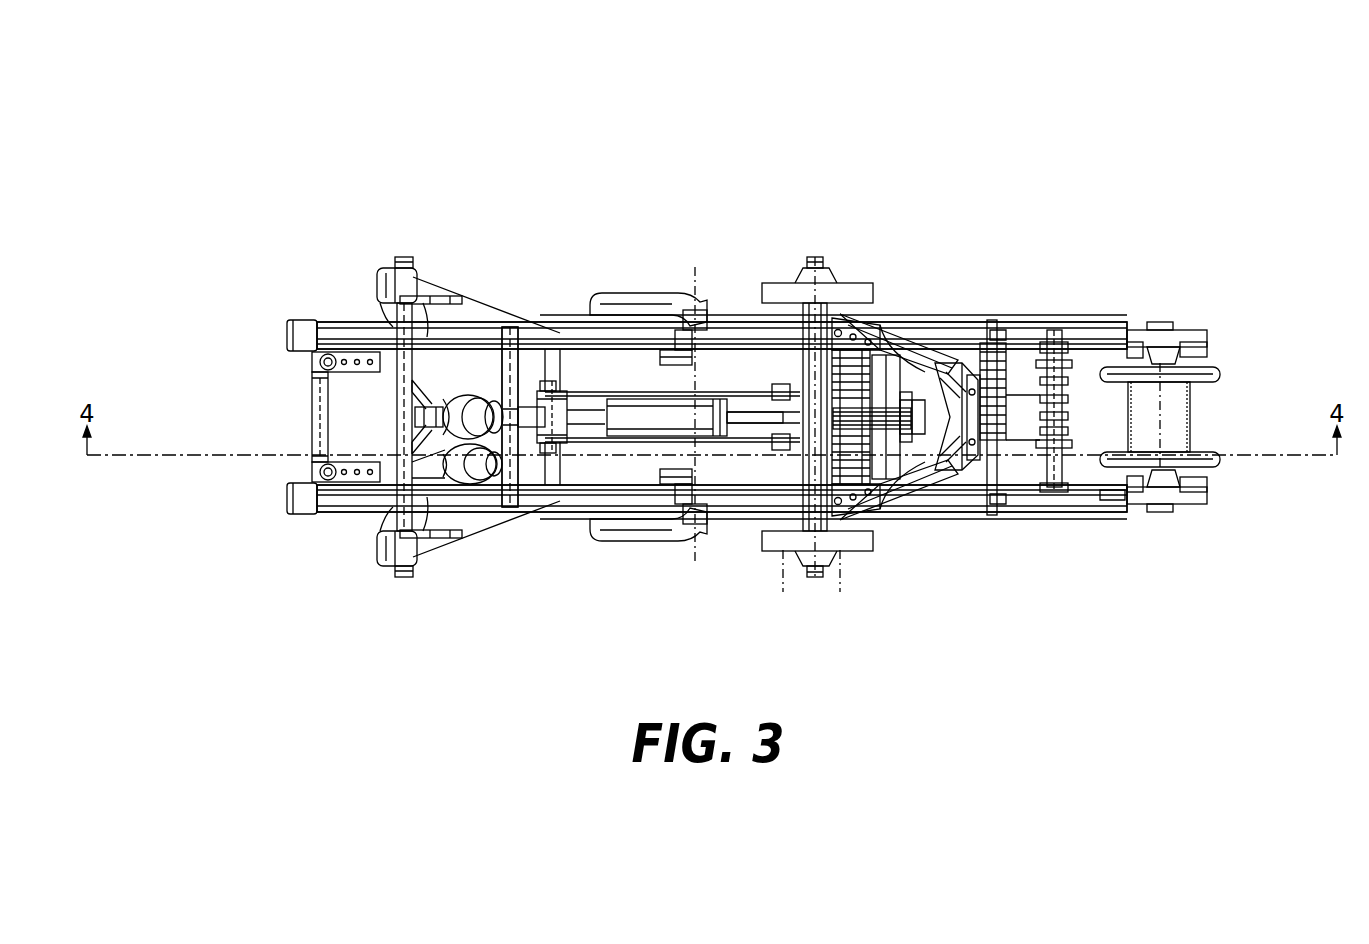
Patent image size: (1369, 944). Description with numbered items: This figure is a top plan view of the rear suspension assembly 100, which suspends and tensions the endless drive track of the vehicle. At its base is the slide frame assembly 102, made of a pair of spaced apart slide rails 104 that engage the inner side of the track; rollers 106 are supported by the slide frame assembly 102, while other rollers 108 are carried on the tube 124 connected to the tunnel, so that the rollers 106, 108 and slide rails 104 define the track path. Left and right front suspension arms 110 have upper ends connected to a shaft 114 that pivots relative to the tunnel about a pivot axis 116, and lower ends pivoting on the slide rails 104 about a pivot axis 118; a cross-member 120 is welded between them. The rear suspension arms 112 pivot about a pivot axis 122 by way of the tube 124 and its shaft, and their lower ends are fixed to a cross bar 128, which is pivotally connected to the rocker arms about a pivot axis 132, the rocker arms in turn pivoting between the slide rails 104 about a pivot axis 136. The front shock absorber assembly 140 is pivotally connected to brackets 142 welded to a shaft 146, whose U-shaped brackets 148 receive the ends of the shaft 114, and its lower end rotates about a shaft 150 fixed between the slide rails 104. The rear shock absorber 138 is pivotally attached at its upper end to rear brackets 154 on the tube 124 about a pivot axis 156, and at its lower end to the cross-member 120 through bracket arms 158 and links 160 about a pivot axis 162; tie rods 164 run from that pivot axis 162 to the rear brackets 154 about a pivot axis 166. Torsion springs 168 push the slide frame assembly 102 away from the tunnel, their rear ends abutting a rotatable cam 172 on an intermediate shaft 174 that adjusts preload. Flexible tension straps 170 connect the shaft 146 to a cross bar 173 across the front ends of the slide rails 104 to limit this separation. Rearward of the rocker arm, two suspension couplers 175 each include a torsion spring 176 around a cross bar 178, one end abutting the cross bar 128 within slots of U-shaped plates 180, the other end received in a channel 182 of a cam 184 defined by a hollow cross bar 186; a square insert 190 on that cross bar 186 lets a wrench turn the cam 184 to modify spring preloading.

The rear suspension assembly 100 is at (766, 138).
The slide frame assembly 102 is at (334, 243).
The slide rails 104 is at (340, 322).
The rollers 106 is at (1218, 374).
The rollers 108 is at (853, 335).
The front suspension arms 110 is at (487, 322).
The rear suspension arms 112 is at (915, 322).
The shaft 114 is at (383, 322).
The pivot axis 116 is at (405, 398).
The pivot axis 118 is at (692, 310).
The cross-member 120 is at (518, 512).
The pivot axis 122 is at (835, 316).
The tube 124 is at (817, 266).
The cross bar 128 is at (988, 327).
The pivot axis 132 is at (977, 500).
The pivot axis 136 is at (936, 480).
The rear shock absorber 138 is at (622, 436).
The front shock absorber assembly 140 is at (498, 398).
The brackets 142 is at (432, 400).
The shaft 146 is at (434, 296).
The U-shaped brackets 148 is at (396, 268).
The shaft 150 is at (513, 322).
The rear brackets 154 is at (781, 284).
The pivot axis 156 is at (840, 590).
The bracket arms 158 is at (540, 512).
The links 160 is at (598, 305).
The pivot axis 162 is at (547, 322).
The tie rods 164 is at (750, 528).
The pivot axis 166 is at (783, 588).
The torsion springs 168 is at (872, 327).
The flexible tension straps 170 is at (307, 360).
The rotatable cam 172 is at (950, 327).
The cross bar 173 is at (313, 425).
The intermediate shaft 174 is at (917, 525).
The suspension couplers 175 is at (998, 320).
The torsion spring 176 is at (1037, 327).
The cross bar 178 is at (1085, 498).
The U-shaped plates 180 is at (999, 470).
The channel 182 is at (1110, 327).
The cam 184 is at (1060, 327).
The cross bar 186 is at (1067, 447).
The square insert 190 is at (1115, 505).